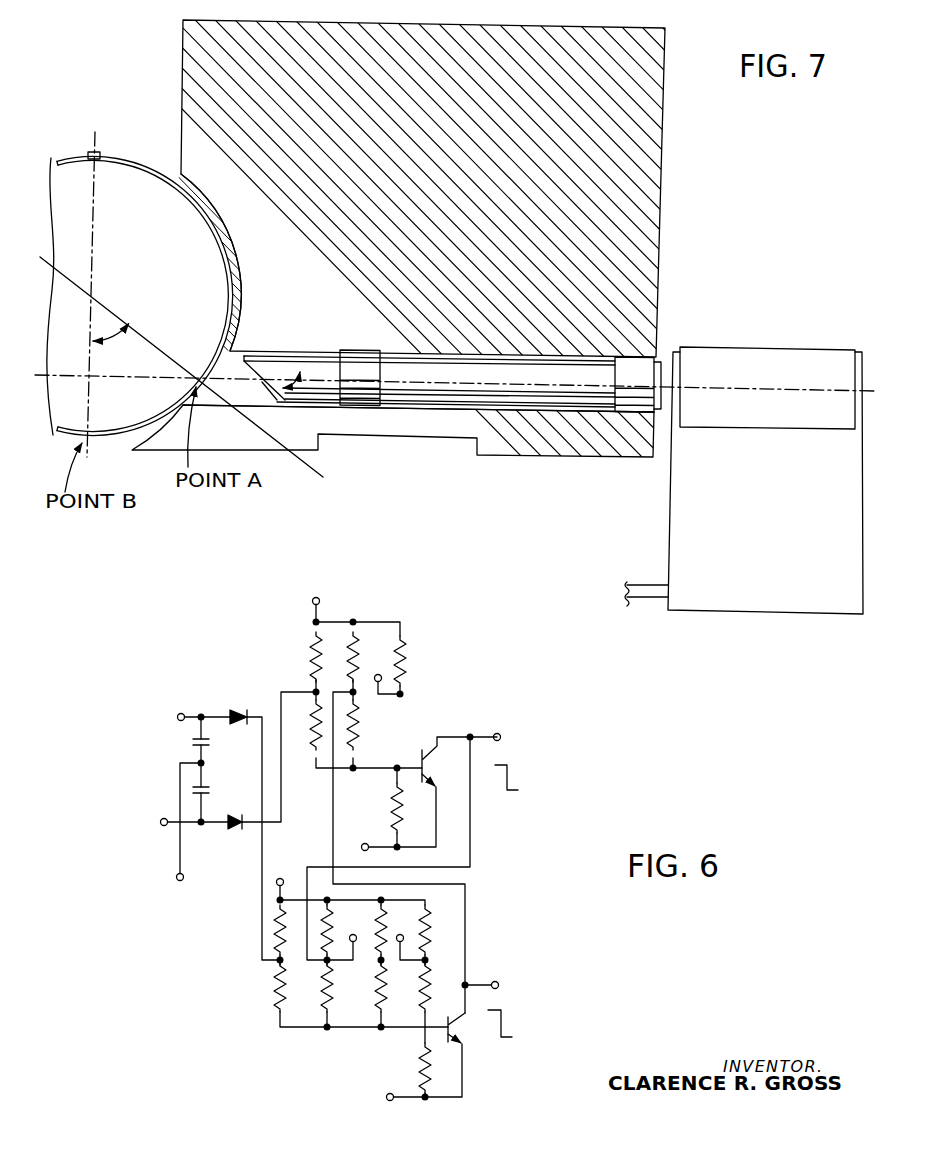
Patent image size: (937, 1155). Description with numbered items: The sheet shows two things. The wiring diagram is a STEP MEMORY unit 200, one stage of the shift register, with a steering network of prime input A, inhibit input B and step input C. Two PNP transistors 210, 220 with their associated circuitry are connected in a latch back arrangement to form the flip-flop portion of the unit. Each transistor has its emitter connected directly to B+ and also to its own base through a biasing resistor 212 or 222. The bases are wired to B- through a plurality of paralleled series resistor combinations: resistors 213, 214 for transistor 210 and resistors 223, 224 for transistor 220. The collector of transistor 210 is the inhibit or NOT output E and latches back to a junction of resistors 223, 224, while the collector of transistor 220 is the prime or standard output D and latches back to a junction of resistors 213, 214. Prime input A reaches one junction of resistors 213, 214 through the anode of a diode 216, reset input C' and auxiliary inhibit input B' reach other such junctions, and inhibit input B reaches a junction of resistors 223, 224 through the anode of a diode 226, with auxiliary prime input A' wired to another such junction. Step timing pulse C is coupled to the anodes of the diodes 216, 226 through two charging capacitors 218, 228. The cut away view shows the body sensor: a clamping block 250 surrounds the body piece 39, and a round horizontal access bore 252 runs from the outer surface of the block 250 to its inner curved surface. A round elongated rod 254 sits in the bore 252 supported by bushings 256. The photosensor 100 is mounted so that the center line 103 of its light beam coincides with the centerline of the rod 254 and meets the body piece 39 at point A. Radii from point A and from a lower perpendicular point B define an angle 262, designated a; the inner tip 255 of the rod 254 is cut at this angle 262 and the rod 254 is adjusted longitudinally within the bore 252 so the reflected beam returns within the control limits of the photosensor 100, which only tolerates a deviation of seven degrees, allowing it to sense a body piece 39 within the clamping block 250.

In FIG. 7, the clamping block 250 is at (661, 226).
In FIG. 7, the body piece 39 is at (98, 441).
In FIG. 7, the angle 262 is at (124, 320).
In FIG. 7, the elongated rod 254 is at (458, 412).
In FIG. 7, the inner tip 255 is at (262, 386).
In FIG. 7, the bushings 256 is at (366, 358).
In FIG. 7, the access bore 252 is at (550, 408).
In FIG. 7, the center line 103 is at (663, 388).
In FIG. 7, the photosensor 100 is at (758, 348).
In FIG. 6, the STEP MEMORY unit 200 is at (370, 587).
In FIG. 6, the resistor 224 is at (312, 654).
In FIG. 6, the resistor 223 is at (312, 748).
In FIG. 6, the diode 216 is at (247, 692).
In FIG. 6, the charging capacitor 218 is at (209, 742).
In FIG. 6, the charging capacitor 228 is at (208, 790).
In FIG. 6, the diode 226 is at (238, 832).
In FIG. 6, the PNP transistor 220 is at (424, 753).
In FIG. 6, the biasing resistor 222 is at (392, 809).
In FIG. 6, the resistor 214 is at (276, 925).
In FIG. 6, the resistor 213 is at (322, 1005).
In FIG. 6, the PNP transistor 210 is at (459, 1041).
In FIG. 6, the biasing resistor 212 is at (428, 1076).